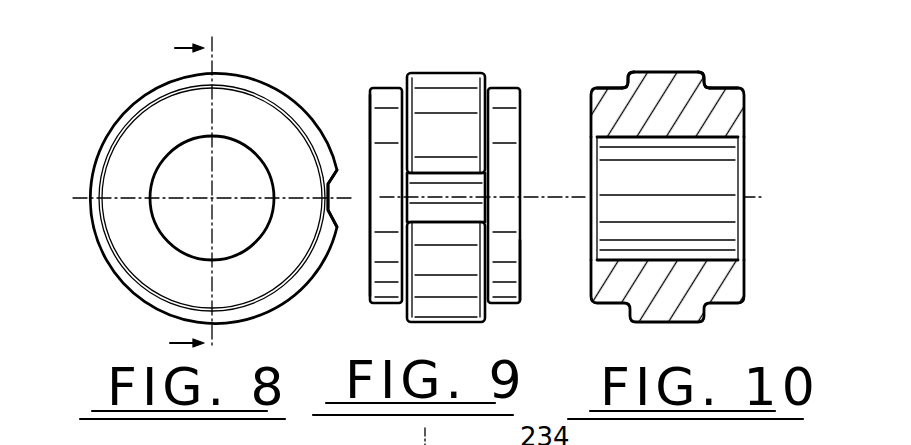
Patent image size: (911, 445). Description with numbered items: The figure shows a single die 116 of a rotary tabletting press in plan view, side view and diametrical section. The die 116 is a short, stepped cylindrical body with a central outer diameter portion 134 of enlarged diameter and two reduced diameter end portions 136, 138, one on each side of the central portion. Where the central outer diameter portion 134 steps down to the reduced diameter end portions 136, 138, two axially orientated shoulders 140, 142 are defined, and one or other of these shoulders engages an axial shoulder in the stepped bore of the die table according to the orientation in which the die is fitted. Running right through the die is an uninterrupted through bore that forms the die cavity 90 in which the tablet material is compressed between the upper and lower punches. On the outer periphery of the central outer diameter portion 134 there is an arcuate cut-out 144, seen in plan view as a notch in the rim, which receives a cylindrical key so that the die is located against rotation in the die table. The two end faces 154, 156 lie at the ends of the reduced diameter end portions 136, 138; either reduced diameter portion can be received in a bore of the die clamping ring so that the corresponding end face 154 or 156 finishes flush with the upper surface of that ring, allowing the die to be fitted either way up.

In FIG. 8, the die cavity 90 is at (190, 176).
In FIG. 10, the die cavity 90 is at (710, 180).
In FIG. 8, the die 116 is at (157, 117).
In FIG. 9, the central outer diameter portion 134 is at (442, 73).
In FIG. 10, the central outer diameter portion 134 is at (667, 72).
In FIG. 9, the reduced diameter end portion 136 is at (397, 90).
In FIG. 10, the reduced diameter end portion 136 is at (603, 87).
In FIG. 9, the reduced diameter end portion 138 is at (500, 88).
In FIG. 10, the reduced diameter end portion 138 is at (725, 88).
In FIG. 10, the axially orientated shoulder 140 is at (628, 85).
In FIG. 10, the axially orientated shoulder 142 is at (710, 80).
In FIG. 8, the arcuate cut-out 144 is at (330, 212).
In FIG. 9, the arcuate cut-out 144 is at (467, 205).
In FIG. 9, the end face 154 is at (370, 107).
In FIG. 9, the end face 156 is at (523, 275).